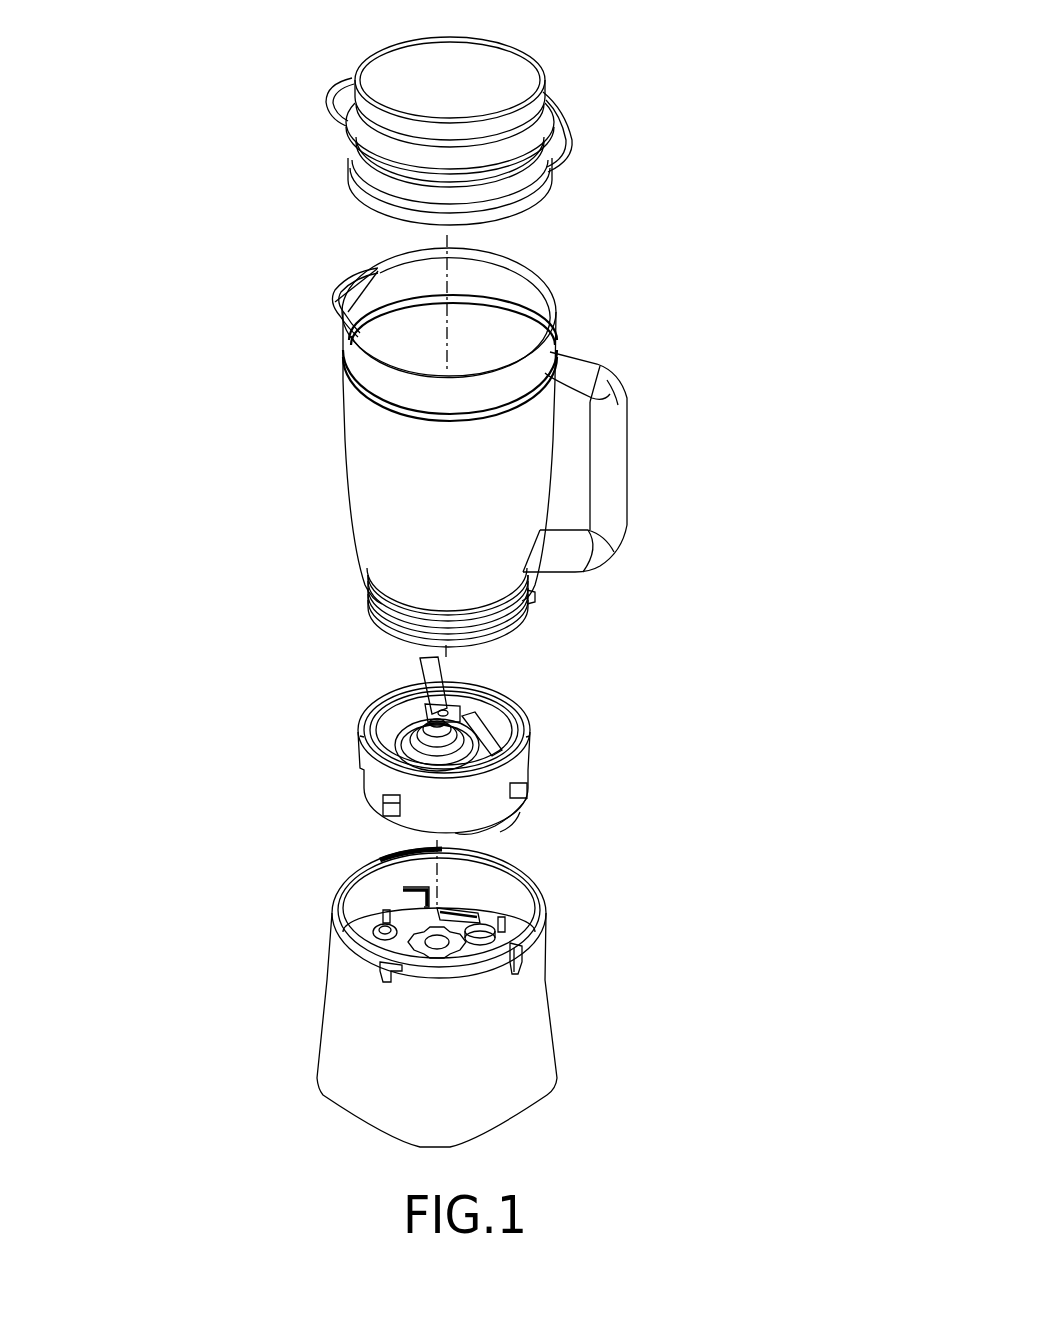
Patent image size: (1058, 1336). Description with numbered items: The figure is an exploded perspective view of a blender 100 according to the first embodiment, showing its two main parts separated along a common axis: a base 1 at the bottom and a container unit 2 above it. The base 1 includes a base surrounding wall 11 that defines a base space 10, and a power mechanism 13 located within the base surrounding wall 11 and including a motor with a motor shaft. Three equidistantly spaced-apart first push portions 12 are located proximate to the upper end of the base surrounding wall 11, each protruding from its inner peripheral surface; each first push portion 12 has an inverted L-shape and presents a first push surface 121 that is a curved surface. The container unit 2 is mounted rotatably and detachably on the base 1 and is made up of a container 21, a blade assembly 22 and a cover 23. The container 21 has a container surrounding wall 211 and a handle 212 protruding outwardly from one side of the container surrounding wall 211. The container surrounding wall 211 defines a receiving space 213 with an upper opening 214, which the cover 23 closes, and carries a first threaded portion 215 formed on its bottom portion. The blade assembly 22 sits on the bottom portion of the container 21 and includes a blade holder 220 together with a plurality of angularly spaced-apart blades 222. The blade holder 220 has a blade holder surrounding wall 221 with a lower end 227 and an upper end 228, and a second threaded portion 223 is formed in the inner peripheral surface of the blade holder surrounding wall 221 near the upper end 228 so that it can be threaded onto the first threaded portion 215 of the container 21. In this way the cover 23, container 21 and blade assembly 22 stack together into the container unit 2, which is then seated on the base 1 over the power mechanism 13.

The blender 100 is at (470, 592).
The base 1 is at (447, 970).
The base space 10 is at (493, 900).
The base surrounding wall 11 is at (535, 903).
The first push portions 12 is at (392, 877).
The first push surface 121 is at (420, 897).
The power mechanism 13 is at (398, 882).
The container unit 2 is at (503, 527).
The container 21 is at (498, 440).
The container surrounding wall 211 is at (357, 475).
The handle 212 is at (600, 473).
The receiving space 213 is at (513, 330).
The upper opening 214 is at (515, 272).
The first threaded portion 215 is at (497, 620).
The blade assembly 22 is at (499, 739).
The blade holder 220 is at (362, 745).
The blade holder surrounding wall 221 is at (523, 778).
The blades 222 is at (430, 675).
The second threaded portion 223 is at (517, 700).
The lower end 227 is at (505, 820).
The upper end 228 is at (527, 722).
The cover 23 is at (565, 98).